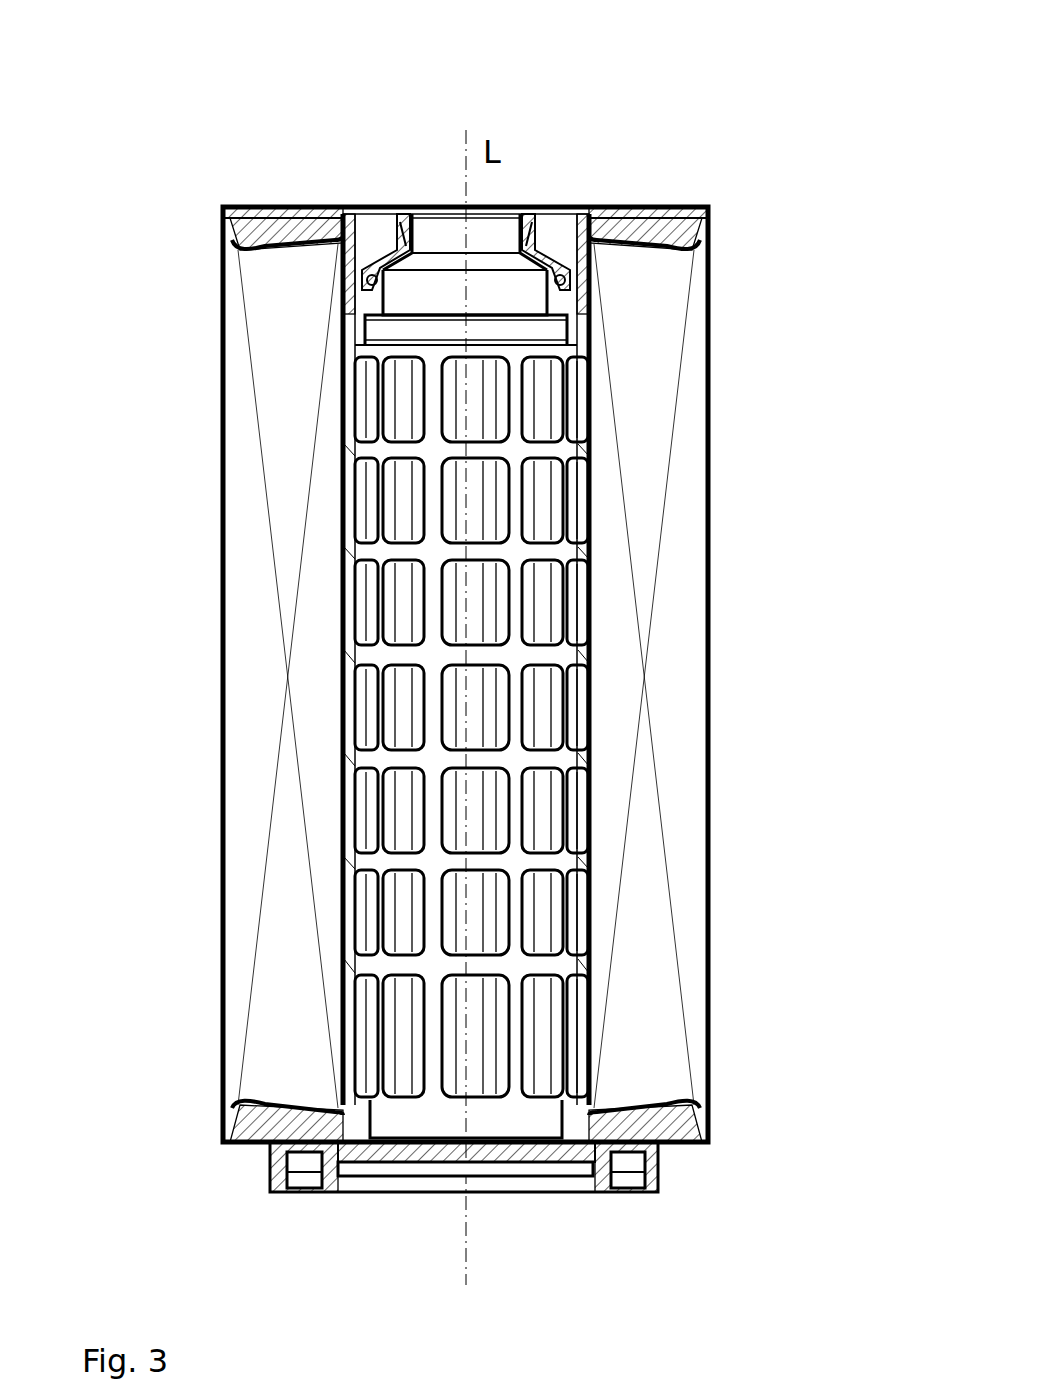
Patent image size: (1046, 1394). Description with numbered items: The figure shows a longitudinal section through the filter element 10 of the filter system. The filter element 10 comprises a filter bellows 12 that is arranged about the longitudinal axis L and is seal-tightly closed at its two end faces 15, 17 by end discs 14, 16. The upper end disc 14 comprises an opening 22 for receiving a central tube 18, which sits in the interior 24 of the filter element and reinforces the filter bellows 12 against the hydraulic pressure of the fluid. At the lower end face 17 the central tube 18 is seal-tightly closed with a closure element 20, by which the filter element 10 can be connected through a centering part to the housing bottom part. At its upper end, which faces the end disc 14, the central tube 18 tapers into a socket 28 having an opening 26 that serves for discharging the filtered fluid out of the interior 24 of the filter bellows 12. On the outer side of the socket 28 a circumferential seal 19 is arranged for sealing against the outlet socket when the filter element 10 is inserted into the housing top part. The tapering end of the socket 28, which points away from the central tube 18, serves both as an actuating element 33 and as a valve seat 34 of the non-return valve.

The filter element 10 is at (752, 100).
The filter bellows 12 is at (653, 437).
The end disc 14 is at (695, 232).
The end face 15 is at (672, 202).
The end disc 16 is at (708, 1135).
The end face 17 is at (699, 1150).
The central tube 18 is at (585, 528).
The circumferential seal 19 is at (588, 284).
The closure element 20 is at (607, 1192).
The opening 22 is at (593, 205).
The interior 24 is at (533, 310).
The opening 26 is at (500, 253).
The socket 28 is at (400, 214).
The actuating element 33 is at (405, 216).
The valve seat 34 is at (426, 185).